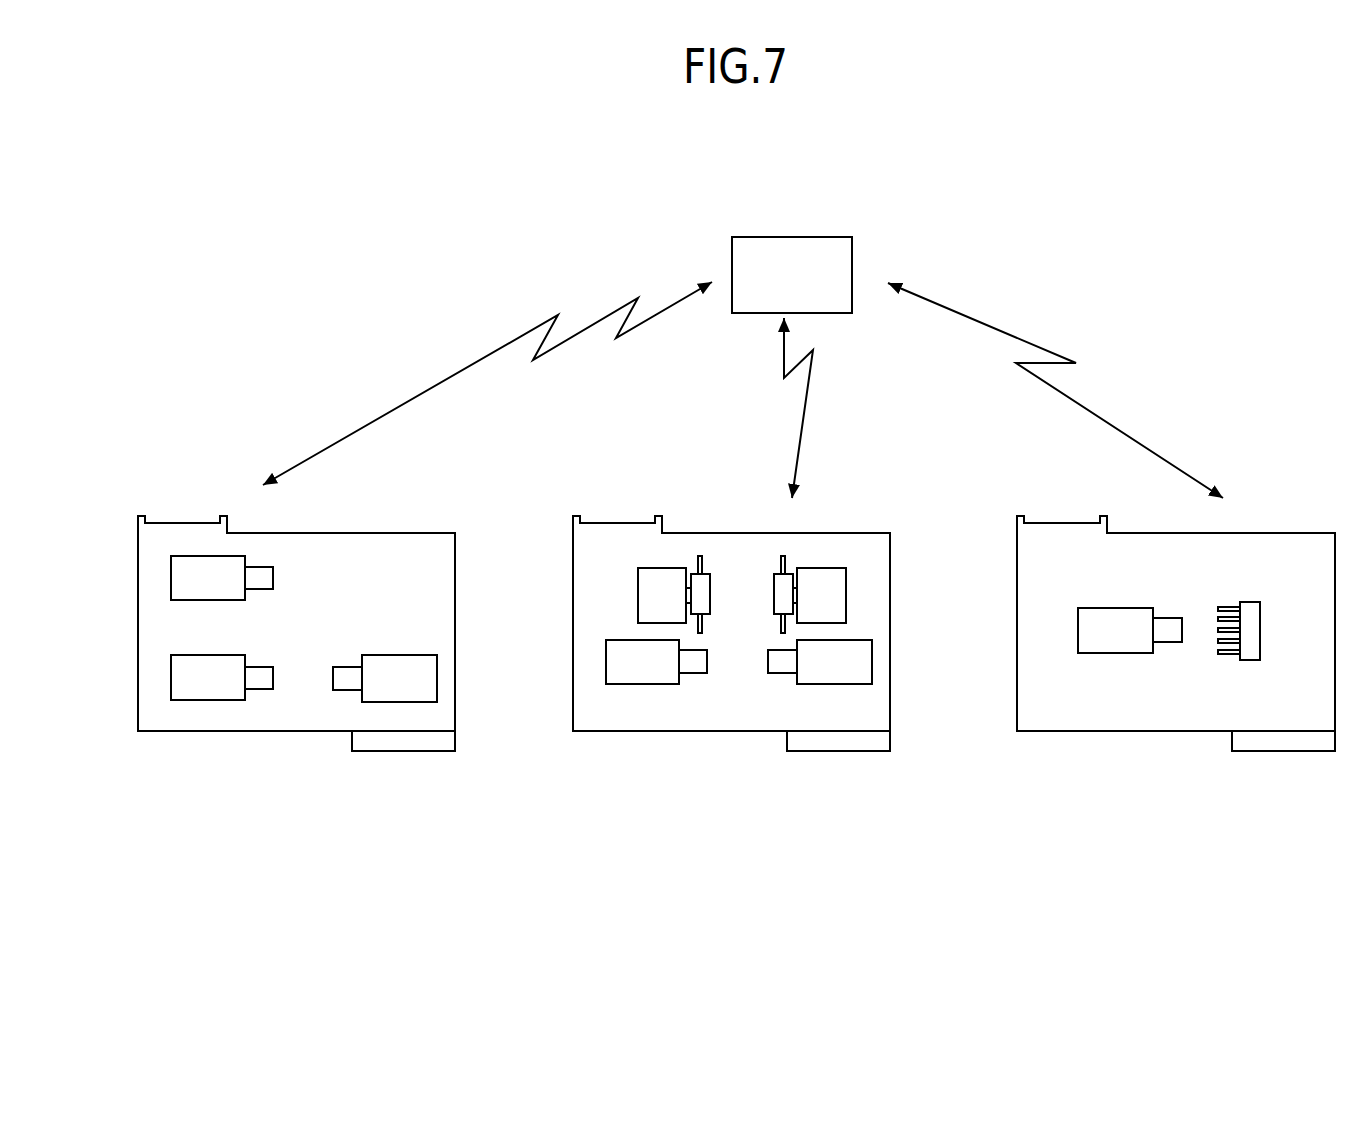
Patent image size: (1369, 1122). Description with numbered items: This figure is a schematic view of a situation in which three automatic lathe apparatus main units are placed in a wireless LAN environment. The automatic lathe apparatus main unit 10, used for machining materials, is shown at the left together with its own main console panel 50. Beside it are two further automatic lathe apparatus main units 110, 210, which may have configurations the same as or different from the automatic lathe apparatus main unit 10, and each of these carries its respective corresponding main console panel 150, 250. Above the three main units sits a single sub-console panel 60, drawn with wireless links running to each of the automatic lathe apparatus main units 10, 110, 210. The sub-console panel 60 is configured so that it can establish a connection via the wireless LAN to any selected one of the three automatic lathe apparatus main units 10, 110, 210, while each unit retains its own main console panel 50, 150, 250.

The sub-console panel 60 is at (828, 271).
The automatic lathe apparatus main unit 10 is at (208, 735).
The main console panel 50 is at (397, 739).
The automatic lathe apparatus main unit 110 is at (628, 735).
The main console panel 150 is at (817, 739).
The automatic lathe apparatus main unit 210 is at (1083, 735).
The main console panel 250 is at (1272, 739).